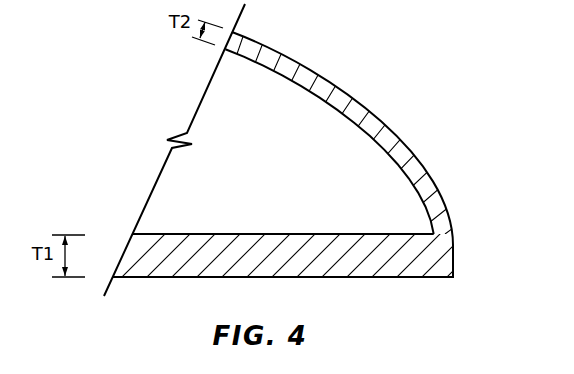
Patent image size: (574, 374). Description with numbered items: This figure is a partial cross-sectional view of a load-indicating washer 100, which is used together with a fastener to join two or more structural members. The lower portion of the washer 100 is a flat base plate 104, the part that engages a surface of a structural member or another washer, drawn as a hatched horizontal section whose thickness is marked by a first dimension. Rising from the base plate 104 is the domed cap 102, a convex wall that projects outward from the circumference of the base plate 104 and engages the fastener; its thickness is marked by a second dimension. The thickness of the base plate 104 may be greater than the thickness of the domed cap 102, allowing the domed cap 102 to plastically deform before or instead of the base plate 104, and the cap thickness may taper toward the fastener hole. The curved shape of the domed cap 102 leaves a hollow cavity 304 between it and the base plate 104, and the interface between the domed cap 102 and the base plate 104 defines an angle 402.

The load-indicating washer 100 is at (311, 154).
The domed cap 102 is at (345, 94).
The base plate 104 is at (337, 277).
The cavity 304 is at (183, 191).
The angle 402 is at (410, 199).